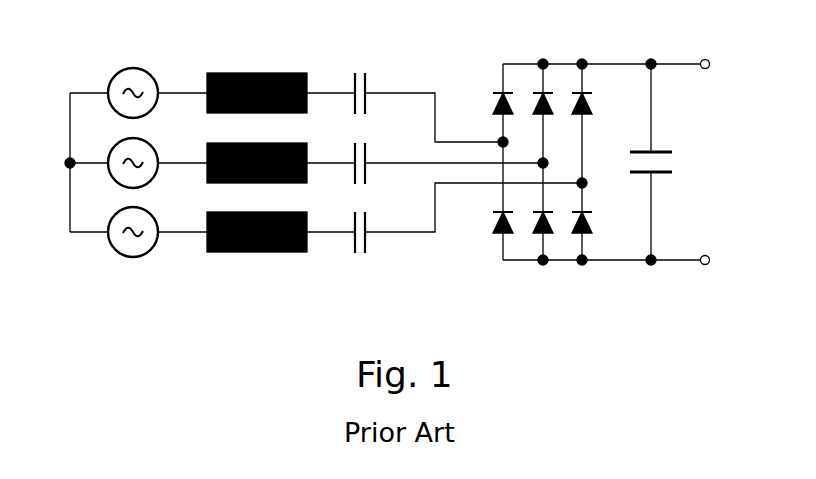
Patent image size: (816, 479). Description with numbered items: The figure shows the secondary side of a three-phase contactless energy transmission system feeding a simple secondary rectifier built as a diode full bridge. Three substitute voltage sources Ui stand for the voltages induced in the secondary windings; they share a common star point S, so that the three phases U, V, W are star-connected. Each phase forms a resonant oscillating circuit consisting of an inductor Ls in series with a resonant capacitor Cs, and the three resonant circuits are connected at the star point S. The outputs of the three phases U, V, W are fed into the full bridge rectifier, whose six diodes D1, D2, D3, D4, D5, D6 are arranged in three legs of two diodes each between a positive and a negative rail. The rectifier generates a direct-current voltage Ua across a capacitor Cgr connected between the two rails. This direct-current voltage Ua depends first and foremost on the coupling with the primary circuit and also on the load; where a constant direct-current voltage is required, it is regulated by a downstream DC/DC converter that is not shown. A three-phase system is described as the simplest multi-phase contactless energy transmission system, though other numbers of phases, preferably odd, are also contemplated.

The star point S is at (74, 162).
The induced voltage Ui is at (158, 57).
The phase U is at (182, 217).
The phase V is at (182, 148).
The phase W is at (182, 78).
The inductor Ls is at (281, 140).
The resonant capacitor Cs is at (468, 140).
The diode D1 is at (493, 233).
The diode D2 is at (493, 116).
The diode D3 is at (533, 233).
The diode D4 is at (533, 116).
The diode D5 is at (572, 233).
The diode D6 is at (572, 116).
The smoothing capacitor Cgr is at (633, 162).
The output direct-current voltage Ua is at (709, 83).